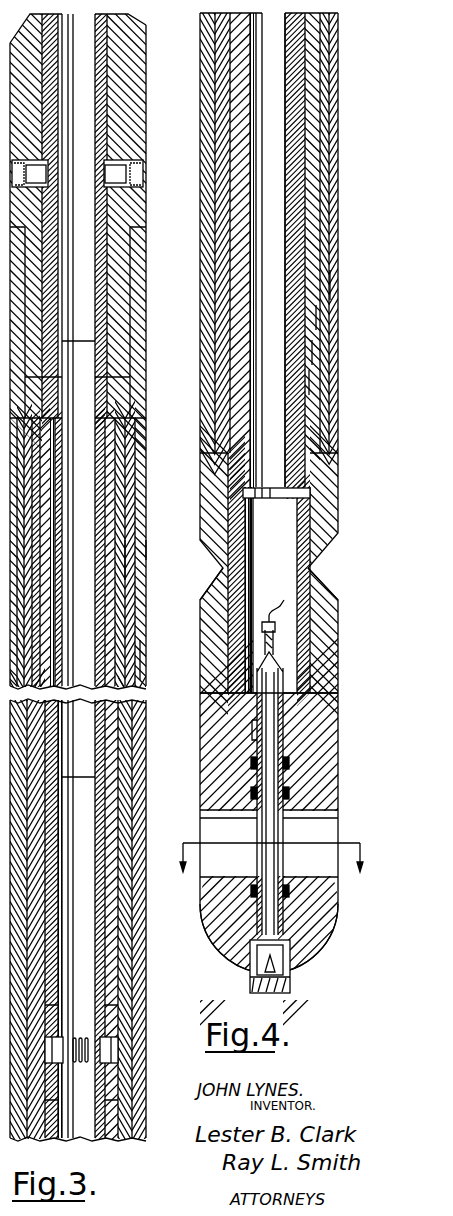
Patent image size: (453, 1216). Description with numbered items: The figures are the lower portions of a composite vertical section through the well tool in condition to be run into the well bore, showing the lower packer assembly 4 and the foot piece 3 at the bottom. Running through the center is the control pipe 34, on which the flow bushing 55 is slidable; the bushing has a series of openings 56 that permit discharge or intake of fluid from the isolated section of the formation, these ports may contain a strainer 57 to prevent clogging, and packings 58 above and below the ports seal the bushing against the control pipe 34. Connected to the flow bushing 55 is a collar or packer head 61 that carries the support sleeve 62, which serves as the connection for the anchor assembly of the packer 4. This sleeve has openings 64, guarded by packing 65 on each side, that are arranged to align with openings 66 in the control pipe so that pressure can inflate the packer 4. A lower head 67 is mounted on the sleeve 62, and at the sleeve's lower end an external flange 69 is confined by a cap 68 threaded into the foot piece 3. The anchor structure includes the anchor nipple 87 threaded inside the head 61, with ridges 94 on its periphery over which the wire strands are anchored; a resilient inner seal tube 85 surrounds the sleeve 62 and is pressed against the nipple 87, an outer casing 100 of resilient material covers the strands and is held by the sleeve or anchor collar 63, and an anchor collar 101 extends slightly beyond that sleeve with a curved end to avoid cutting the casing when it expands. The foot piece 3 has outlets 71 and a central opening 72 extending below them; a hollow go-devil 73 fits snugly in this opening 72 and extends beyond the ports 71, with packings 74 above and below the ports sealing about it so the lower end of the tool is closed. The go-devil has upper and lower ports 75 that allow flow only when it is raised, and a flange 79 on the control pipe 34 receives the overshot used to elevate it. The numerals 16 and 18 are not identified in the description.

In FIG. 4, the foot piece 3 is at (325, 725).
In FIG. 3, the lower packer assembly 4 is at (143, 662).
In FIG. 4, the valve stem 16 is at (280, 616).
In FIG. 4, the section line 18 is at (275, 871).
In FIG. 3, the control pipe 34 is at (108, 54).
In FIG. 4, the control pipe 34 is at (295, 80).
In FIG. 3, the flow bushing 55 is at (135, 118).
In FIG. 3, the openings 56 is at (113, 172).
In FIG. 3, the strainer 57 is at (142, 177).
In FIG. 3, the packings 58 is at (108, 224).
In FIG. 3, the packer head 61 is at (137, 332).
In FIG. 3, the support sleeve 62 is at (110, 420).
In FIG. 4, the support sleeve 62 is at (300, 113).
In FIG. 3, the anchor collar 63 is at (143, 464).
In FIG. 4, the anchor collar 63 is at (312, 354).
In FIG. 3, the openings 64 is at (118, 1048).
In FIG. 3, the packing 65 is at (118, 1010).
In FIG. 3, the openings 66 is at (102, 1072).
In FIG. 4, the lower head 67 is at (328, 550).
In FIG. 4, the cap 68 is at (330, 605).
In FIG. 4, the external flange 69 is at (312, 628).
In FIG. 4, the outlets 71 is at (322, 835).
In FIG. 4, the central opening 72 is at (283, 748).
In FIG. 4, the go-devil 73 is at (255, 727).
In FIG. 4, the packings 74 is at (252, 792).
In FIG. 4, the ports 75 is at (258, 663).
In FIG. 4, the flange 79 is at (290, 493).
In FIG. 3, the inner seal tube 85 is at (130, 940).
In FIG. 4, the inner seal tube 85 is at (318, 160).
In FIG. 3, the anchor nipple 87 is at (128, 565).
In FIG. 4, the anchor nipple 87 is at (318, 315).
In FIG. 4, the ridges 94 is at (310, 383).
In FIG. 3, the outer casing 100 is at (134, 843).
In FIG. 4, the outer casing 100 is at (330, 198).
In FIG. 3, the anchor collar 101 is at (146, 553).
In FIG. 4, the anchor collar 101 is at (330, 285).